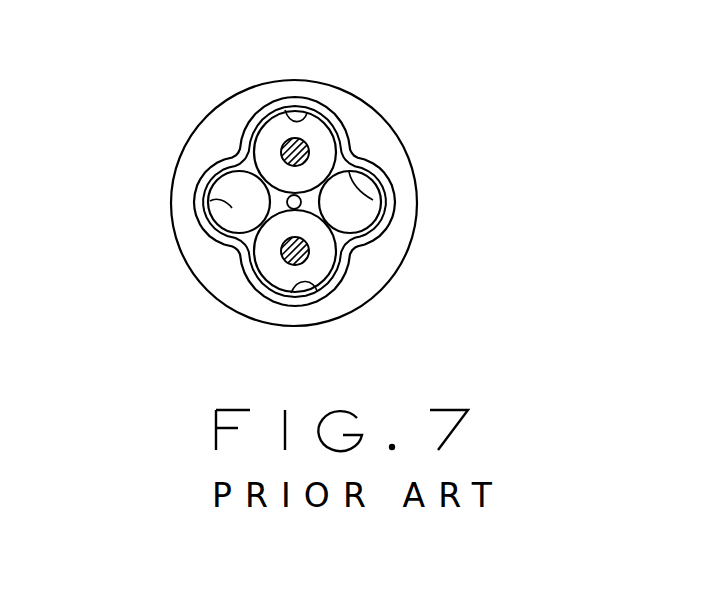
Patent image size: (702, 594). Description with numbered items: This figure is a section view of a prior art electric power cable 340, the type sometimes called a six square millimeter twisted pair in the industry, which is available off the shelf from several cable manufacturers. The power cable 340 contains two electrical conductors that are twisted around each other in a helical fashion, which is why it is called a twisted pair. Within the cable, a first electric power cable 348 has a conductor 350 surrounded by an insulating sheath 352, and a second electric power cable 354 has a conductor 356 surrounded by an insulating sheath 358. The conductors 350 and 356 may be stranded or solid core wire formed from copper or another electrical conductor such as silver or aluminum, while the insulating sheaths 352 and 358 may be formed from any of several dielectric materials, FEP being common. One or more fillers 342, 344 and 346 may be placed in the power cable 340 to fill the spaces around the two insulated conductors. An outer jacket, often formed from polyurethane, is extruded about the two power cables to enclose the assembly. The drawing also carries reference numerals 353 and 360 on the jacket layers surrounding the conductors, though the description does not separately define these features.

The electric power cable 340 is at (445, 72).
The filler 342 is at (373, 200).
The filler 344 is at (298, 205).
The filler 346 is at (232, 208).
The first electric power cable 348 is at (307, 113).
The conductor 350 is at (278, 140).
The insulating sheath 352 is at (260, 148).
The inner jacket 353 is at (329, 103).
The second electric power cable 354 is at (317, 291).
The conductor 356 is at (308, 258).
The insulating sheath 358 is at (275, 272).
The outer jacket 360 is at (178, 155).